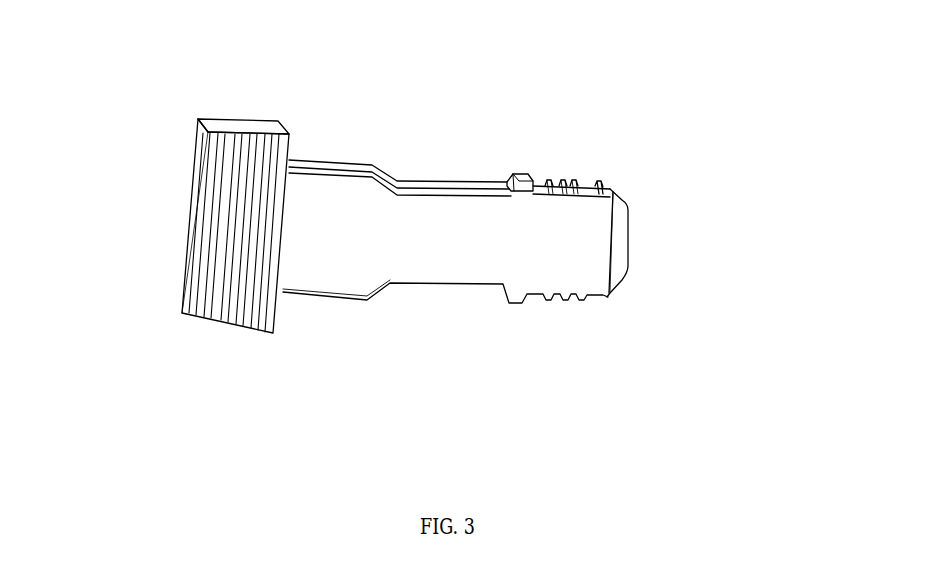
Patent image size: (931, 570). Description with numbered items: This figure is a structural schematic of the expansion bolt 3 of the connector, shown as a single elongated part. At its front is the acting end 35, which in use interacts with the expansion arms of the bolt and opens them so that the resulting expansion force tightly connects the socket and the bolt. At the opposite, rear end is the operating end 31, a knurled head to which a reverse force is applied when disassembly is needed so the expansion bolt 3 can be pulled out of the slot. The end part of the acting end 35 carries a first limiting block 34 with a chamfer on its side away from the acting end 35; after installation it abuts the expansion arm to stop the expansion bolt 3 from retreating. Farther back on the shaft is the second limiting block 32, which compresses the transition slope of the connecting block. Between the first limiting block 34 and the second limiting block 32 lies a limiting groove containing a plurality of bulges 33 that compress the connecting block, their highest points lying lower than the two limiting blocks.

The expansion bolt 3 is at (440, 238).
The operating end 31 is at (250, 208).
The second limiting block 32 is at (513, 173).
The bulges 33 is at (552, 187).
The first limiting block 34 is at (608, 193).
The acting end 35 is at (627, 252).